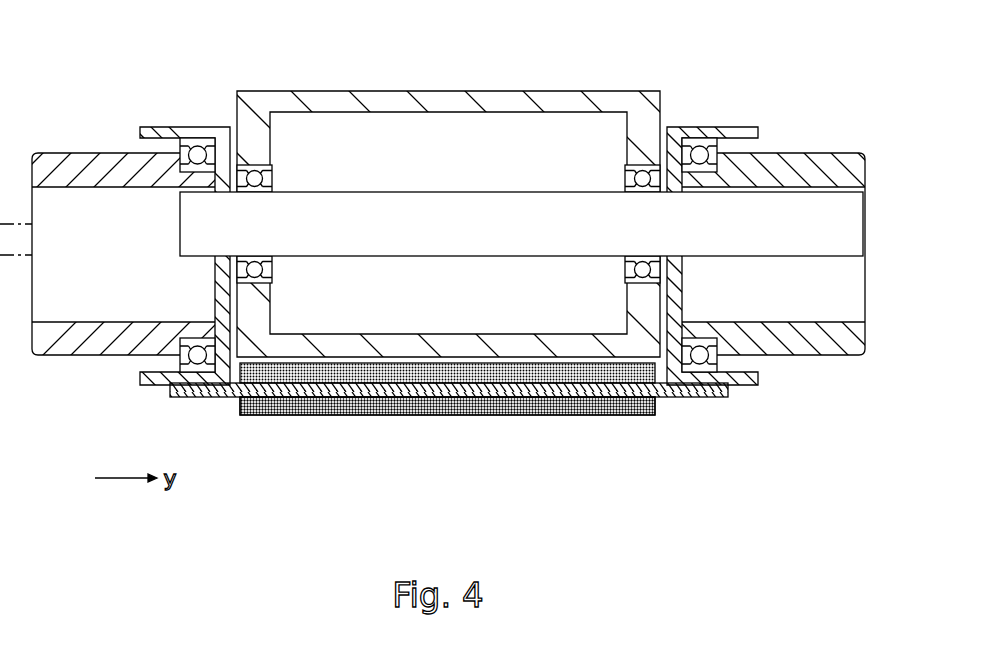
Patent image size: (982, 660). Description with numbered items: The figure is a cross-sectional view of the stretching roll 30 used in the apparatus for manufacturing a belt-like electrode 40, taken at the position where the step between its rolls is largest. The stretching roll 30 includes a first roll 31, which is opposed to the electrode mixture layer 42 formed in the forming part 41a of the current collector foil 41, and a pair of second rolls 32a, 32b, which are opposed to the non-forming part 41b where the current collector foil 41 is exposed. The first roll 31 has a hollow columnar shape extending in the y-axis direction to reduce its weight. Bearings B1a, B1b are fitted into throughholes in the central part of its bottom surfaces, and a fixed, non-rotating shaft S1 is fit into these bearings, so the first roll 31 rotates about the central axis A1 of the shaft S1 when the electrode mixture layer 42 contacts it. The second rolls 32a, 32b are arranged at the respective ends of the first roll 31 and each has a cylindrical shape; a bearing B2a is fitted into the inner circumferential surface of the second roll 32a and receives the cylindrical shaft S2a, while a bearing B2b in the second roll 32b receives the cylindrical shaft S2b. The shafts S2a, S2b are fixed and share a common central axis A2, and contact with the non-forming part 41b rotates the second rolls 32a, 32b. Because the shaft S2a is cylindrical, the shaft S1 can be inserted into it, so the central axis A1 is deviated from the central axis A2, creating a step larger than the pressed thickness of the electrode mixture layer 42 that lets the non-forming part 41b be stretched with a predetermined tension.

The stretching roll 30 is at (790, 57).
The first roll 31 is at (501, 91).
The second roll 32a is at (738, 127).
The second roll 32b is at (143, 127).
The shaft (first shaft) S1 is at (460, 190).
The shaft (second shaft) S2a is at (842, 155).
The shaft (second shaft) S2b is at (47, 153).
The bearing B1a is at (624, 172).
The bearing B1b is at (273, 172).
The bearing B2a is at (697, 137).
The bearing B2b is at (197, 137).
The central axis A1 is at (866, 224).
The central axis A2 is at (866, 255).
The belt-like electrode 40 is at (449, 434).
The current collector foil 41 is at (449, 434).
The forming part 41a is at (607, 397).
The non-forming part 41b is at (582, 461).
The electrode mixture layer 42 is at (520, 413).